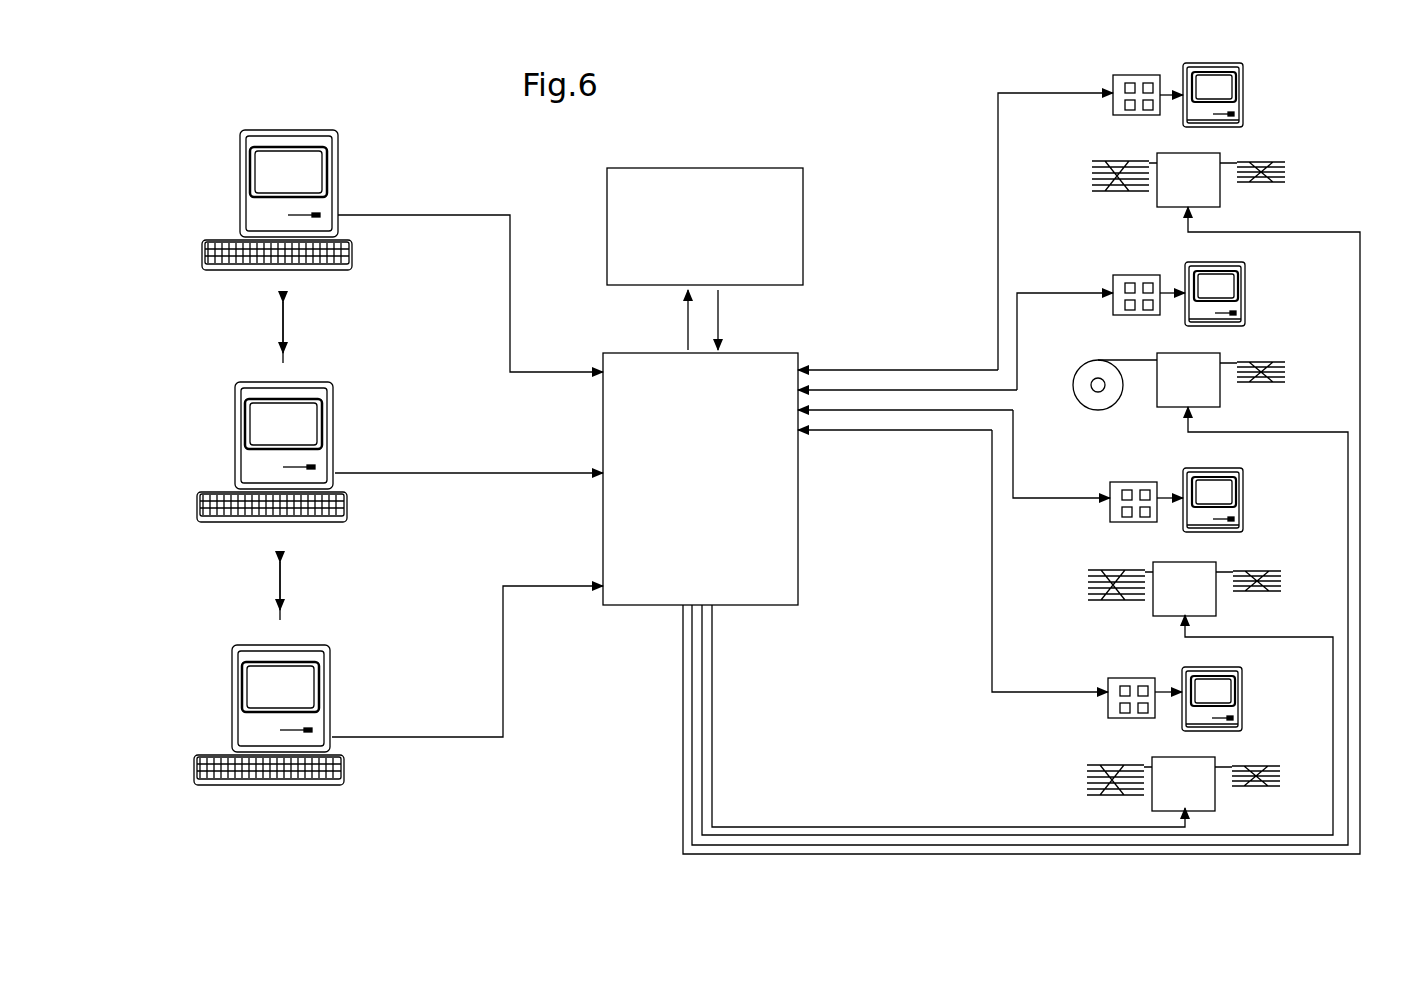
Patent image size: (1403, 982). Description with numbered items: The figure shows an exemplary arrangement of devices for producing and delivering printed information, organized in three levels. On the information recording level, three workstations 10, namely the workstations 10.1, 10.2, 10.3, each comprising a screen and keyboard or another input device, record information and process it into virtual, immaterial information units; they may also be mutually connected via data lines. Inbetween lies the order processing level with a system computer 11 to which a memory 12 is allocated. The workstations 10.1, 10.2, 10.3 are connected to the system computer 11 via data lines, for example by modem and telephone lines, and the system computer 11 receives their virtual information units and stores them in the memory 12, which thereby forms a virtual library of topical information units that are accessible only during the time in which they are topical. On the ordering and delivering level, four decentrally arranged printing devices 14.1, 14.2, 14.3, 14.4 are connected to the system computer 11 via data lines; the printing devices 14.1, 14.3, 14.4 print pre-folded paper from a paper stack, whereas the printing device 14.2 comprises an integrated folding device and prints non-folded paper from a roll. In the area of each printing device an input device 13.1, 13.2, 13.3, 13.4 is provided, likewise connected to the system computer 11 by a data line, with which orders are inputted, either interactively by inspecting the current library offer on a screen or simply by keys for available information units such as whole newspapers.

The workstation 10 is at (331, 111).
The first workstation 10.1 is at (250, 128).
The second workstation 10.2 is at (247, 380).
The third workstation 10.3 is at (245, 645).
The system computer 11 is at (717, 492).
The memory 12 is at (719, 233).
The input device 13.1 is at (1206, 57).
The input device 13.2 is at (1216, 261).
The input device 13.3 is at (1230, 463).
The input device 13.4 is at (1111, 719).
The printing device 14.1 is at (1170, 190).
The printing device 14.2 is at (1163, 395).
The printing device 14.3 is at (1165, 600).
The printing device 14.4 is at (1197, 768).